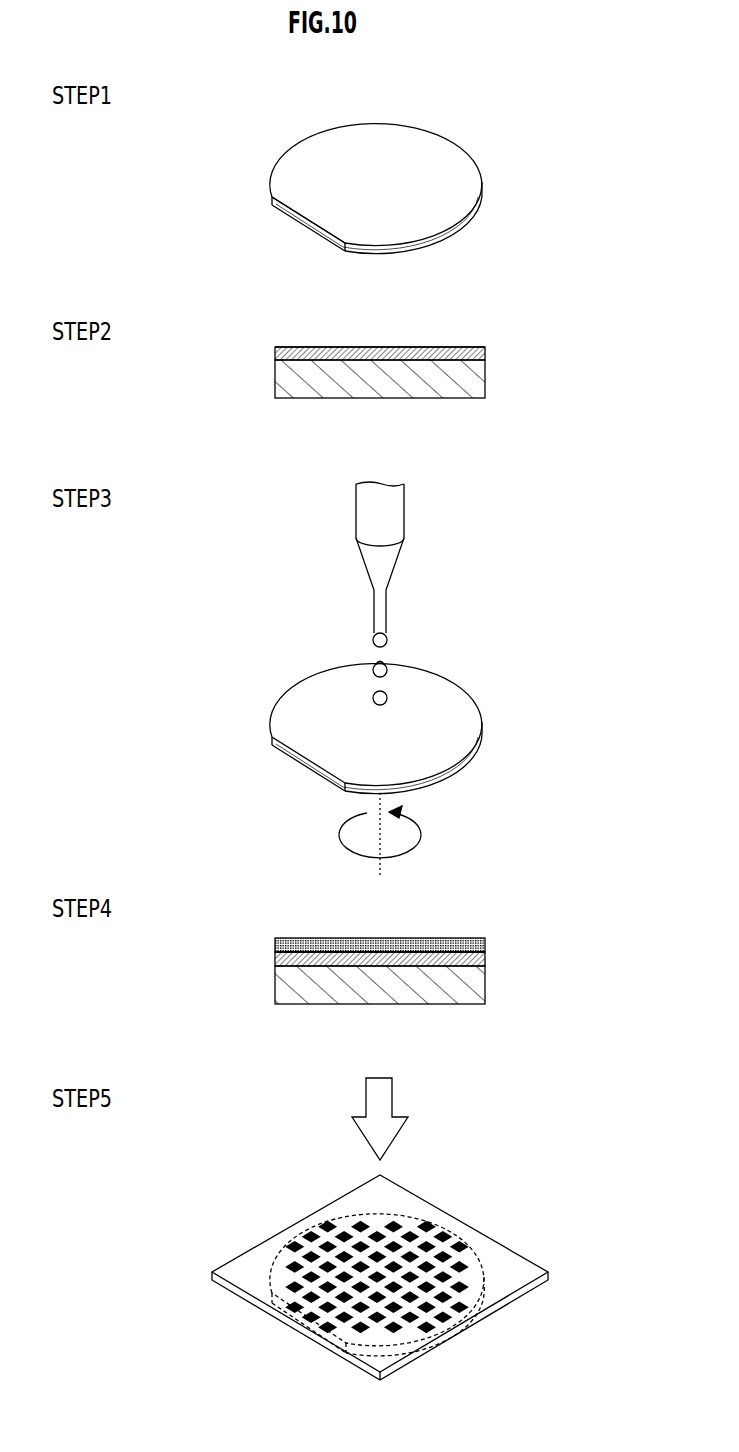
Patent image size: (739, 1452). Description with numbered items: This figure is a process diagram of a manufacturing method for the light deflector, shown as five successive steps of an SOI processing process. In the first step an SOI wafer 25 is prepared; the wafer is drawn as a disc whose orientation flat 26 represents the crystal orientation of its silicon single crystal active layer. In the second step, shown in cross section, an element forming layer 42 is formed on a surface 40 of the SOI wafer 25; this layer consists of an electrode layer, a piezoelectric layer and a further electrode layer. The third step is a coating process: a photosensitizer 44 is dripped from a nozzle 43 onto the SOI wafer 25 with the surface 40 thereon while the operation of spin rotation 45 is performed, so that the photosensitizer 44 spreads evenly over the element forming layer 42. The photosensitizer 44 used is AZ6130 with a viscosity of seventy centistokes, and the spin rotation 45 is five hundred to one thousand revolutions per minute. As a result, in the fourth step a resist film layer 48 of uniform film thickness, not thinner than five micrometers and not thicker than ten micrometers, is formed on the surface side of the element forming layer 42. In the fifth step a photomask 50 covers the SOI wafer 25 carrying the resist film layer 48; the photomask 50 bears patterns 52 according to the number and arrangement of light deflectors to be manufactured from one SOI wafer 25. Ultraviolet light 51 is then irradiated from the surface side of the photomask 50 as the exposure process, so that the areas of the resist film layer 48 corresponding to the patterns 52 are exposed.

The SOI wafer 25 is at (284, 143).
The orientation flat 26 is at (300, 228).
The surface 40 is at (420, 140).
The element forming layer 42 is at (275, 352).
The nozzle 43 is at (395, 520).
The photosensitizer 44 is at (388, 697).
The spin rotation 45 is at (420, 830).
The resist film layer 48 is at (275, 945).
The photomask 50 is at (484, 1216).
The ultraviolet light 51 is at (405, 1128).
The patterns 52 is at (300, 1250).